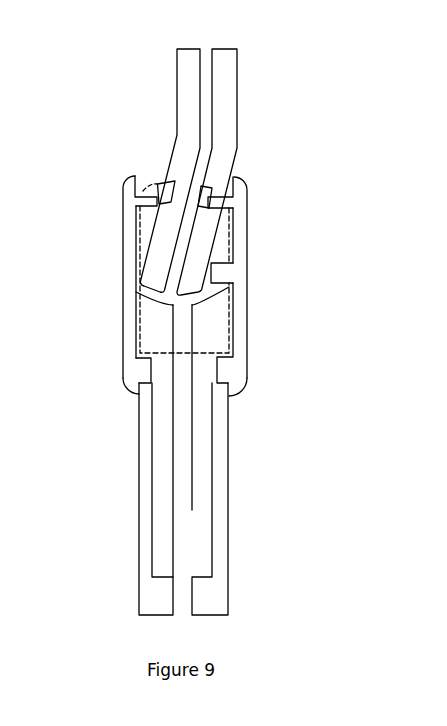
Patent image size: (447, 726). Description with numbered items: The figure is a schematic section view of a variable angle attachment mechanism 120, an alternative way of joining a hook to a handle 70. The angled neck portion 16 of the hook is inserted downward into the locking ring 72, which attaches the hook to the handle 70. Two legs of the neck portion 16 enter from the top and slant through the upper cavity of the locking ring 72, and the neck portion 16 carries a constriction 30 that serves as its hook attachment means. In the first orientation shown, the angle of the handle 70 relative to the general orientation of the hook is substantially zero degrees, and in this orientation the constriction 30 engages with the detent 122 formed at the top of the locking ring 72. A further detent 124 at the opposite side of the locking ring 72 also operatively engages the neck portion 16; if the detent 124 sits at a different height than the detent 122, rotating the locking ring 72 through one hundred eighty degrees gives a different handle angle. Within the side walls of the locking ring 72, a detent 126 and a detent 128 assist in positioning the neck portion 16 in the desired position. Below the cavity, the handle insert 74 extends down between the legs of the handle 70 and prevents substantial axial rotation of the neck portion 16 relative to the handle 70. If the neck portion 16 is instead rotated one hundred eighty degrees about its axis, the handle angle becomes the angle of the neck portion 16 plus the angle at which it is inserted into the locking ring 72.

The neck portion 16 is at (177, 110).
The constriction 30 is at (206, 196).
The handle 70 is at (212, 598).
The locking ring 72 is at (245, 354).
The handle insert 74 is at (203, 412).
The variable angle attachment mechanism 120 is at (88, 380).
The detent 122 is at (224, 202).
The detent 124 is at (139, 197).
The detent 126 is at (137, 269).
The detent 128 is at (216, 273).